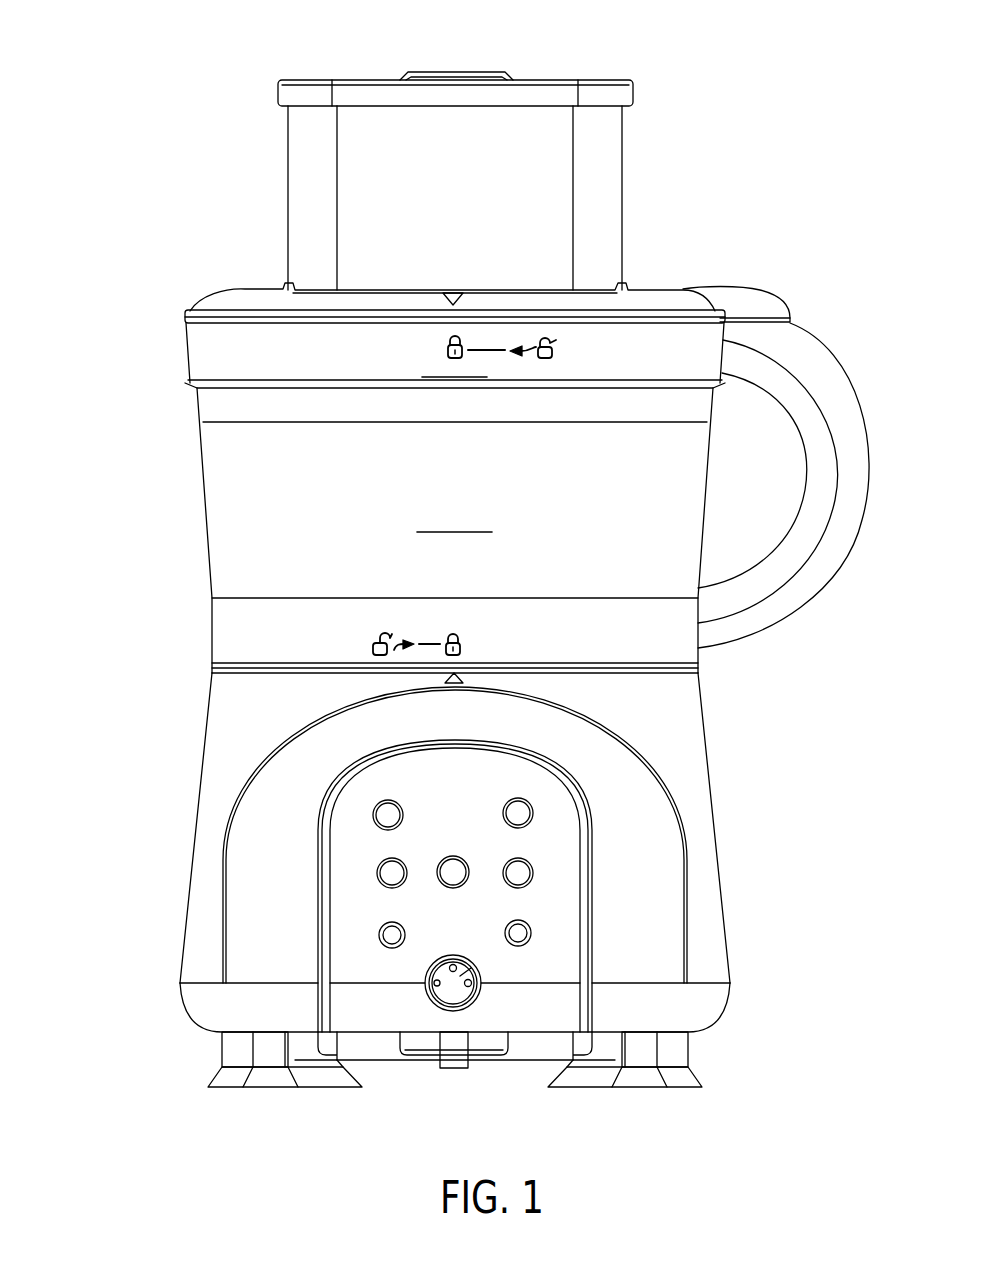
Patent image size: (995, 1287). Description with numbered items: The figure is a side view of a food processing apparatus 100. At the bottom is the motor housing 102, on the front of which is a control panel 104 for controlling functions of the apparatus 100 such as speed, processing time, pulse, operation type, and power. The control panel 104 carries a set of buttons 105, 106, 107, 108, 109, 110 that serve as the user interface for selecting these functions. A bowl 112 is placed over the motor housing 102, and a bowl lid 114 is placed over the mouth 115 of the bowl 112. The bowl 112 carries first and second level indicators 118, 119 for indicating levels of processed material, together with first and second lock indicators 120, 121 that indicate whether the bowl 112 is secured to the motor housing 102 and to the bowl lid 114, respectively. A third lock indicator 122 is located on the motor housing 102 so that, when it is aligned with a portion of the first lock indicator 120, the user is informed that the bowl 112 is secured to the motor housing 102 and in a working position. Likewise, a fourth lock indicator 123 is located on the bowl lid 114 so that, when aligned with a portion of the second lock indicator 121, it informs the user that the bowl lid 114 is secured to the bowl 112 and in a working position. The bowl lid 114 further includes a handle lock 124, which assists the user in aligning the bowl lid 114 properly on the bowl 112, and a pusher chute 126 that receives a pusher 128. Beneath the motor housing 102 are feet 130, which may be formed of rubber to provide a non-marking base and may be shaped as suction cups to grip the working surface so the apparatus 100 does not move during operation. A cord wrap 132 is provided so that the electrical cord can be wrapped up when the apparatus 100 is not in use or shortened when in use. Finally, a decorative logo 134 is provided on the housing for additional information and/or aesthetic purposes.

The processing apparatus 100 is at (124, 33).
The motor housing 102 is at (723, 825).
The control panel 104 is at (560, 930).
The button 105 is at (380, 805).
The button 106 is at (522, 815).
The button 107 is at (523, 875).
The button 108 is at (452, 868).
The button 109 is at (380, 875).
The button 110 is at (378, 932).
The bowl 112 is at (200, 490).
The bowl lid 114 is at (213, 295).
The mouth 115 is at (186, 323).
The first level indicator 118 is at (420, 370).
The second level indicator 119 is at (452, 533).
The first lock indicator 120 is at (467, 643).
The second lock indicator 121 is at (560, 355).
The third lock indicator 122 is at (467, 680).
The fourth lock indicator 123 is at (464, 299).
The handle lock 124 is at (765, 291).
The pusher chute 126 is at (627, 178).
The pusher 128 is at (557, 82).
The feet 130 is at (270, 1087).
The cord wrap 132 is at (535, 1047).
The logo 134 is at (482, 972).